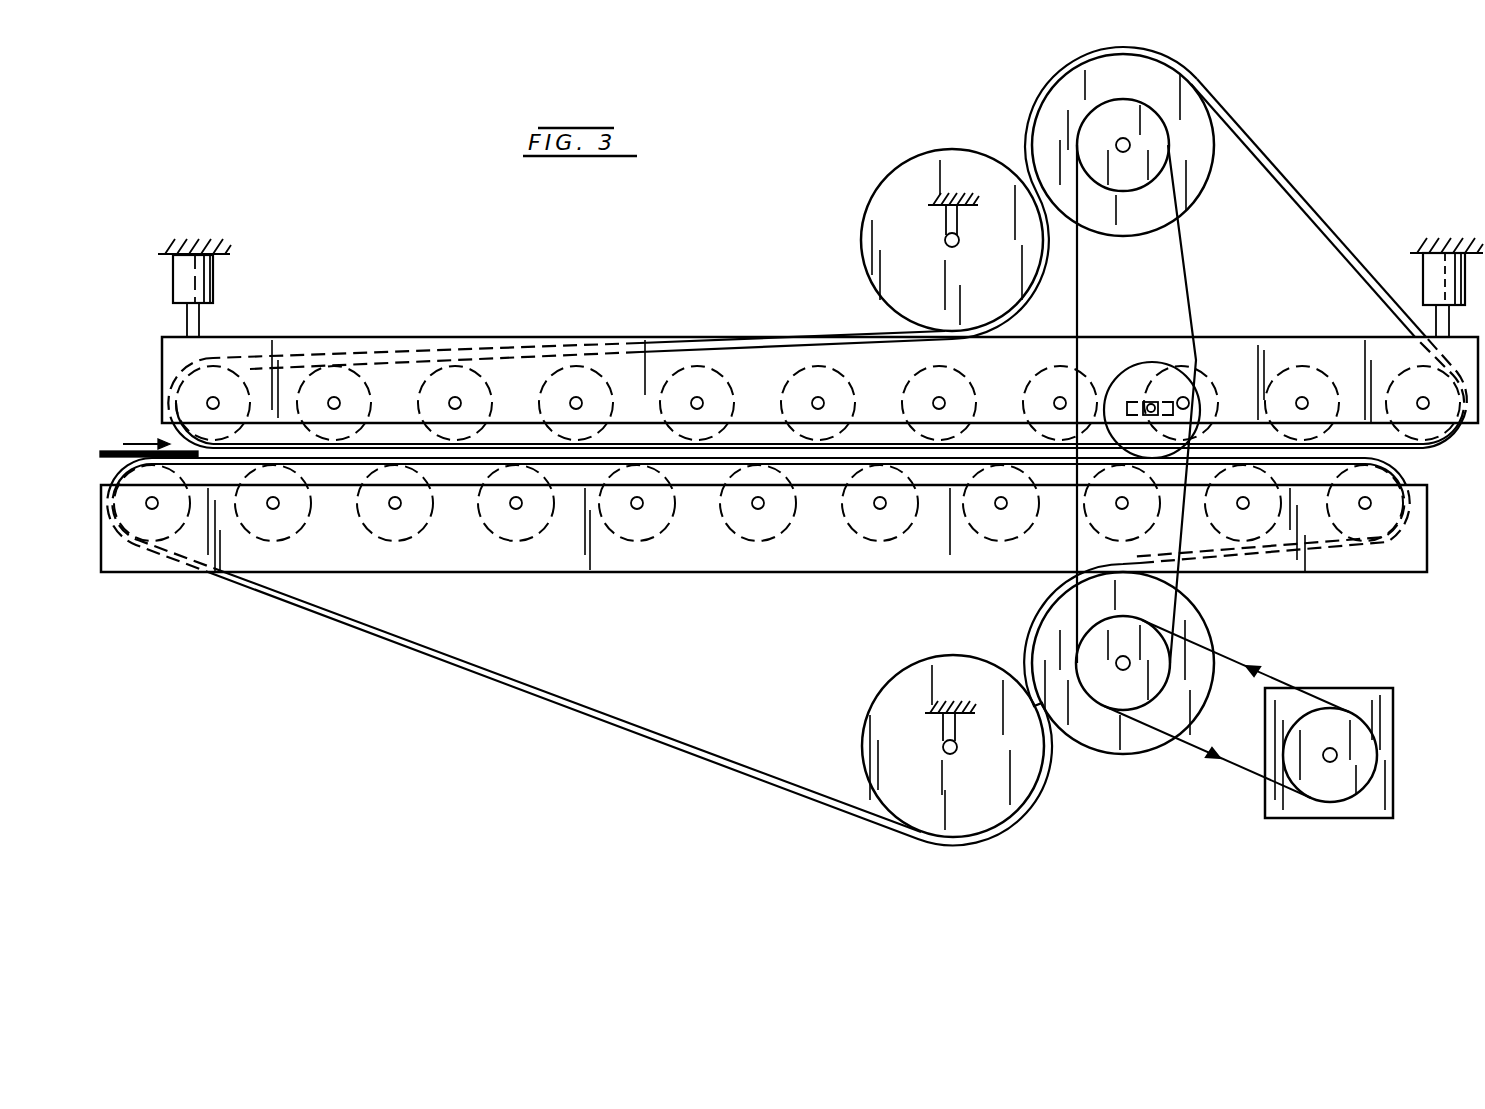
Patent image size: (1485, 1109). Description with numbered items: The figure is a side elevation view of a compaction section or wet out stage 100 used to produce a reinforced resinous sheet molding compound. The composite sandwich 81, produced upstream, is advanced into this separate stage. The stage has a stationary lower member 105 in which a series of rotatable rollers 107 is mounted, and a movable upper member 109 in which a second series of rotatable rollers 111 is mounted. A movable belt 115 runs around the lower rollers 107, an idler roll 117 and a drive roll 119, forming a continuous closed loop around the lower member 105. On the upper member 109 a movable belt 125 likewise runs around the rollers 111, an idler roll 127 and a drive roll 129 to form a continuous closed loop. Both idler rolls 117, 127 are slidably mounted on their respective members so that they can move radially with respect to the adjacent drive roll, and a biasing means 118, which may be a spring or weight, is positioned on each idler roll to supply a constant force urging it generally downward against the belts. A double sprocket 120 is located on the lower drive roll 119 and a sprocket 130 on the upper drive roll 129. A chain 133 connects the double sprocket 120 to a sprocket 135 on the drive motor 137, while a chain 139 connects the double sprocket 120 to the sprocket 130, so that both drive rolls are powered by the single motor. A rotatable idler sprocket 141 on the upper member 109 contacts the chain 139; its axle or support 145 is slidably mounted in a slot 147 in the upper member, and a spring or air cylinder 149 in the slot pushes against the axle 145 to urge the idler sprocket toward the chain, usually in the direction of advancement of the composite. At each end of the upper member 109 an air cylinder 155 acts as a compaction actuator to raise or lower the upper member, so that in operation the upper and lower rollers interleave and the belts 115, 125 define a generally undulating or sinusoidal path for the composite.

The composite sandwich 81 is at (108, 451).
The compaction section or wet out stage 100 is at (503, 288).
The stationary lower member 105 is at (685, 574).
The rotatable rollers 107 is at (430, 521).
The movable upper member 109 is at (390, 337).
The rotatable rollers 111 is at (493, 381).
The movable belt 115 is at (535, 692).
The idler roll 117 is at (868, 710).
The biasing means 118 is at (960, 232).
The drive roll 119 is at (1117, 748).
The double sprocket 120 is at (1088, 656).
The movable belt 125 is at (1281, 178).
The idler roll 127 is at (868, 208).
The drive roll 129 is at (1197, 193).
The sprocket 130 is at (1097, 120).
The chain 133 is at (1232, 660).
The sprocket 135 is at (1358, 730).
The drive motor 137 is at (1393, 755).
The chain 139 is at (1193, 292).
The rotatable idler sprocket 141 is at (1134, 402).
The axle or support 145 is at (1158, 400).
The slot 147 is at (1128, 407).
The spring or air cylinder 149 is at (1150, 402).
The air cylinder 155 is at (215, 278).